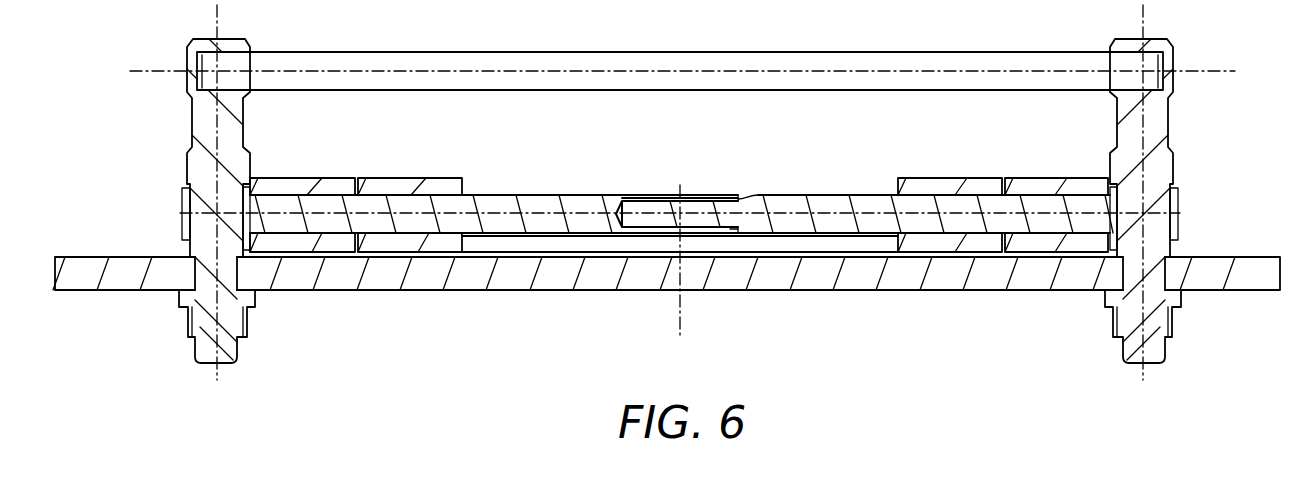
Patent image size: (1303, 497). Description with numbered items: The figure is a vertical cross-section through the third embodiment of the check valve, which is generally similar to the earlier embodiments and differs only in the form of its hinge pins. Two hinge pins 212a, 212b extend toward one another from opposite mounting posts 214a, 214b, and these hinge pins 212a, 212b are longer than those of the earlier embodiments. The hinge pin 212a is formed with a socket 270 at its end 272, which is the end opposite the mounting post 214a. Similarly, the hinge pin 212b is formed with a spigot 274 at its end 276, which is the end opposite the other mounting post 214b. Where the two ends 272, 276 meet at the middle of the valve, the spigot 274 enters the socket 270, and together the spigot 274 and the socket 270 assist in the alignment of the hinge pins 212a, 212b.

The mounting post 214a is at (188, 172).
The other mounting post 214b is at (1172, 172).
The hinge pin 212a is at (503, 207).
The hinge pin 212b is at (823, 207).
The socket 270 is at (617, 212).
The end 272 is at (723, 197).
The spigot 274 is at (696, 220).
The end 276 is at (742, 218).